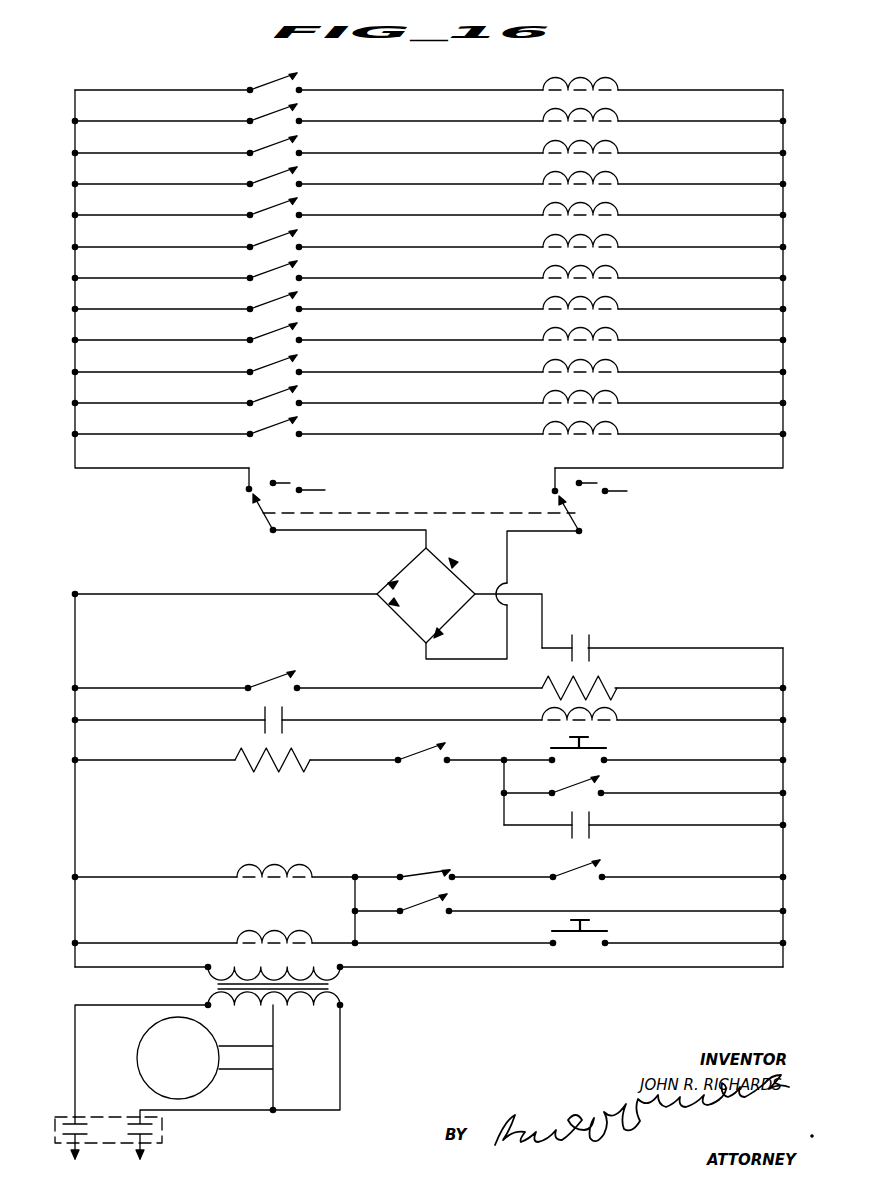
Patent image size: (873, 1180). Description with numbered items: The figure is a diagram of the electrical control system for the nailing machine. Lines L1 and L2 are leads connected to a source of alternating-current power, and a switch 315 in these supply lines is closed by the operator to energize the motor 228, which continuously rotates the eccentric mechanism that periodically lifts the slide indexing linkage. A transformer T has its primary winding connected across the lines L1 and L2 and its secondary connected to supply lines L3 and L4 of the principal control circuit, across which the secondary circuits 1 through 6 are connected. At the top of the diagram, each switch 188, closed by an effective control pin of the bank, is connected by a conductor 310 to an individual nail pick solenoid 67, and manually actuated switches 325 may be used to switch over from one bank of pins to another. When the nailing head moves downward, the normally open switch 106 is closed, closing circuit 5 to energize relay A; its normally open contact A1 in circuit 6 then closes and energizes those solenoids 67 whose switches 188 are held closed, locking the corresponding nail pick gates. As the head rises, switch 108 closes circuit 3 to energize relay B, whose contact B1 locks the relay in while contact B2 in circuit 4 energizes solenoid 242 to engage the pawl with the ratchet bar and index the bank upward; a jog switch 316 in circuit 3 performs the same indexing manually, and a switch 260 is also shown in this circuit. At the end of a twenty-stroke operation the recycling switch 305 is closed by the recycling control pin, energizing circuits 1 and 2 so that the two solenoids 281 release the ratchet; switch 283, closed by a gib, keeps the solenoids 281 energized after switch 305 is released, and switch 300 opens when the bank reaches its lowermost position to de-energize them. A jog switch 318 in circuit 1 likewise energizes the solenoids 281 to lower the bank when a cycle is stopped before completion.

The switches 188 is at (261, 116).
The conductor 310 is at (462, 90).
The nail pick solenoid 67 is at (600, 92).
The manually actuated switches 325 is at (261, 518).
The normally open switch 106 is at (272, 680).
The normally open contact A1 is at (591, 640).
The relay A is at (612, 683).
The solenoid 242 is at (617, 715).
The contact B2 is at (262, 713).
The relay B is at (258, 749).
The contacts 260 is at (421, 757).
The jog switch 316 is at (556, 750).
The switch 108 is at (564, 781).
The normally open contact B1 is at (564, 820).
The solenoids 281 is at (262, 860).
The switch 300 is at (426, 874).
The switch 283 is at (580, 873).
The recycling switch 305 is at (414, 913).
The jog switch 318 is at (554, 934).
The supply line L3 is at (75, 967).
The supply line L4 is at (783, 967).
The transformer T is at (340, 1005).
The motor 228 is at (200, 1069).
The switch 315 is at (165, 1136).
The line L1 is at (70, 1157).
The line L2 is at (148, 1157).
The circuit 1 is at (420, 944).
The circuit 2 is at (419, 878).
The circuit 3 is at (419, 761).
The circuit 4 is at (419, 721).
The circuit 5 is at (419, 689).
The circuit 6 is at (214, 595).